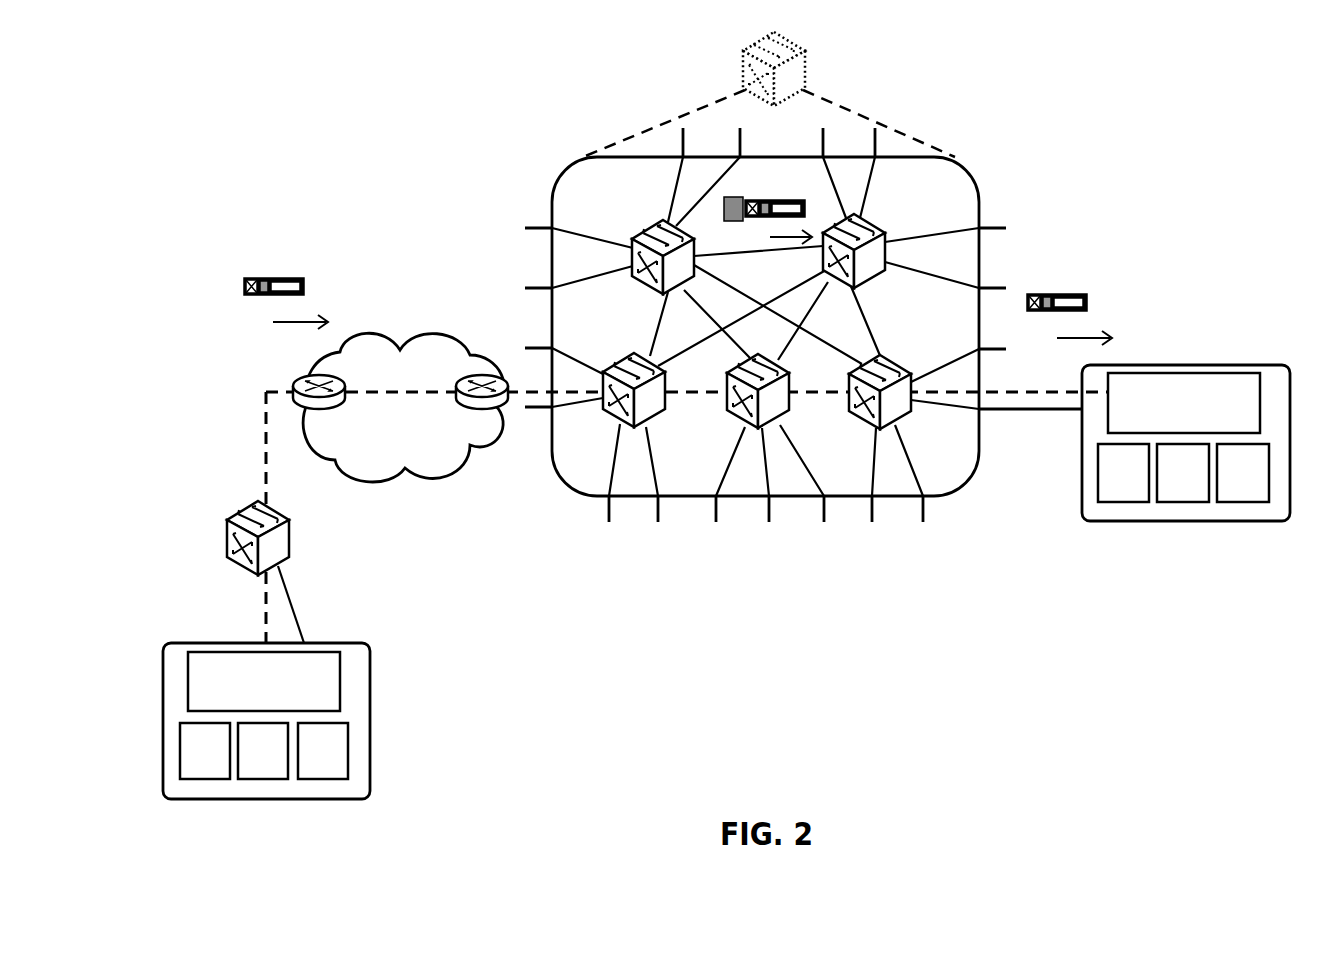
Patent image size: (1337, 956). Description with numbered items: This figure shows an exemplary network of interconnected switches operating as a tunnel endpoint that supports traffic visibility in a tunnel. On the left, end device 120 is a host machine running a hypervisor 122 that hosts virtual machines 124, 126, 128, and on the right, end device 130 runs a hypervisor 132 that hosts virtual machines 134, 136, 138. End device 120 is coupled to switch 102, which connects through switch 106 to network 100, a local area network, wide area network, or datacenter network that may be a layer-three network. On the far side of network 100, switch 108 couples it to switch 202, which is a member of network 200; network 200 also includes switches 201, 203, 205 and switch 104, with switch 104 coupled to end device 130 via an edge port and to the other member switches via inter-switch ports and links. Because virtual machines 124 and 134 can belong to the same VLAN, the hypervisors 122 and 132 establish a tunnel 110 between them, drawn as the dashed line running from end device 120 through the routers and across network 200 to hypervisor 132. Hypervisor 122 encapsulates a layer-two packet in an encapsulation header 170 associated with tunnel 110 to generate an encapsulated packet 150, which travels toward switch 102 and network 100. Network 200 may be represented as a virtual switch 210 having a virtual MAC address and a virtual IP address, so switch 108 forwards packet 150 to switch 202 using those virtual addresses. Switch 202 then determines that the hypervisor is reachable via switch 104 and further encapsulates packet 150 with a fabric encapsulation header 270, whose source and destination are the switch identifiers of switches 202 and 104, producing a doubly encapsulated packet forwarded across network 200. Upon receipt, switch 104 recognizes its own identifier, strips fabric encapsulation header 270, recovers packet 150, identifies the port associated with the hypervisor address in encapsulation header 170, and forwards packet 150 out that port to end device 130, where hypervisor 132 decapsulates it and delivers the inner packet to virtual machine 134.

The network 100 is at (378, 338).
The switch 102 is at (250, 514).
The switch 104 is at (914, 407).
The switch 106 is at (300, 377).
The switch 108 is at (472, 376).
The tunnel 110 is at (264, 391).
The end device 120 is at (237, 643).
The hypervisor 122 is at (264, 681).
The virtual machine 124 is at (205, 751).
The virtual machine 126 is at (263, 751).
The virtual machine 128 is at (323, 751).
The end device 130 is at (1237, 365).
The hypervisor 132 is at (1184, 403).
The virtual machine 134 is at (1123, 473).
The virtual machine 136 is at (1183, 473).
The virtual machine 138 is at (1243, 473).
The encapsulated packet 150 is at (292, 296).
The encapsulation header 170 is at (254, 278).
The network 200 is at (960, 160).
The switch 201 is at (645, 282).
The switch 202 is at (670, 403).
The switch 203 is at (796, 410).
The switch 205 is at (886, 274).
The virtual switch 210 is at (808, 66).
The fabric encapsulation header 270 is at (736, 197).